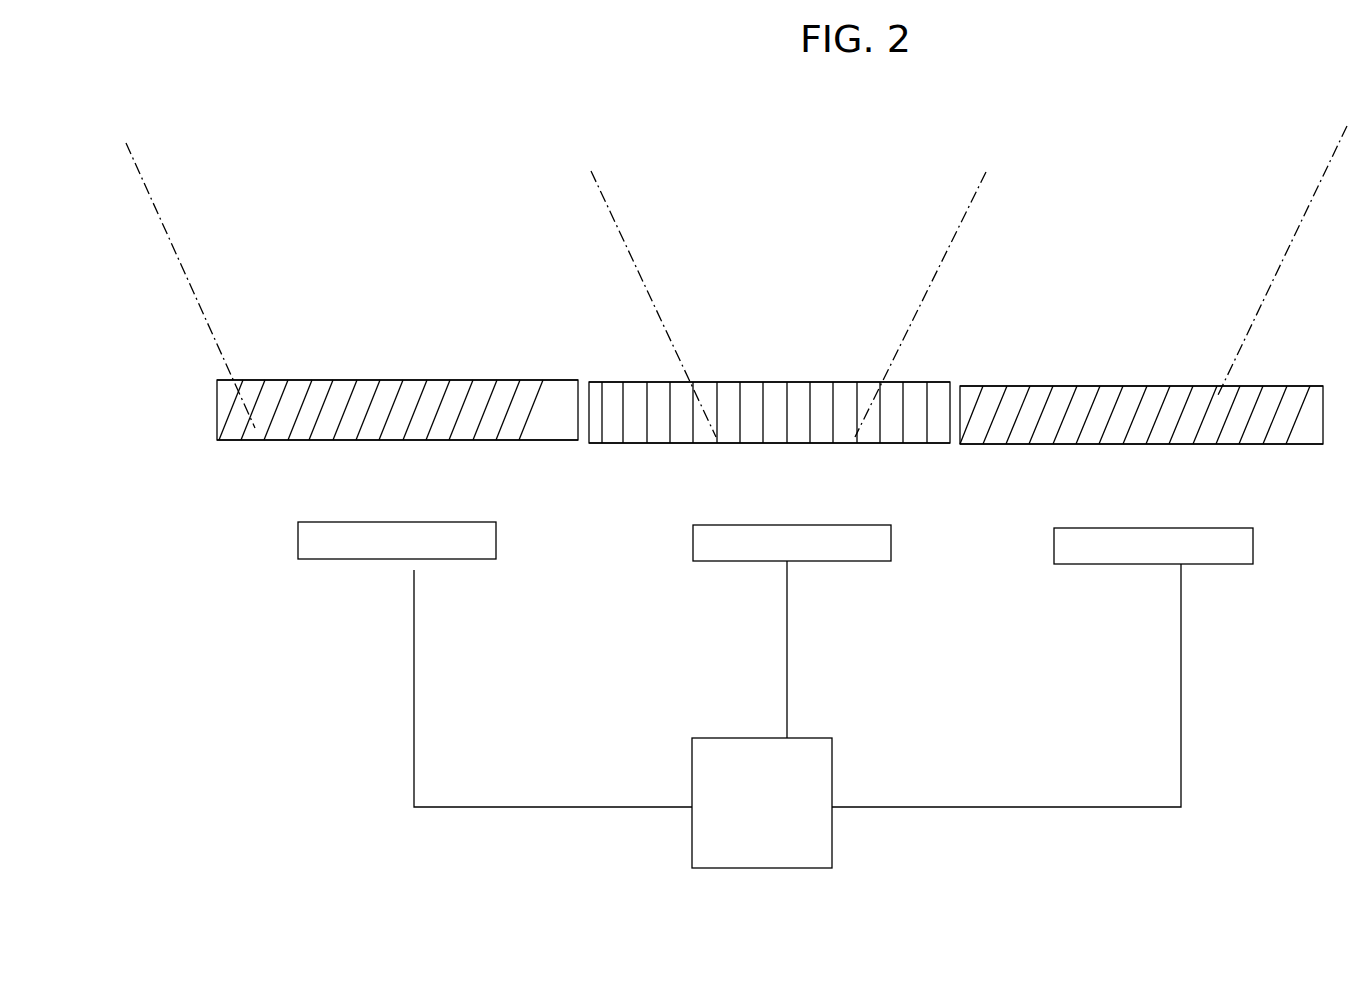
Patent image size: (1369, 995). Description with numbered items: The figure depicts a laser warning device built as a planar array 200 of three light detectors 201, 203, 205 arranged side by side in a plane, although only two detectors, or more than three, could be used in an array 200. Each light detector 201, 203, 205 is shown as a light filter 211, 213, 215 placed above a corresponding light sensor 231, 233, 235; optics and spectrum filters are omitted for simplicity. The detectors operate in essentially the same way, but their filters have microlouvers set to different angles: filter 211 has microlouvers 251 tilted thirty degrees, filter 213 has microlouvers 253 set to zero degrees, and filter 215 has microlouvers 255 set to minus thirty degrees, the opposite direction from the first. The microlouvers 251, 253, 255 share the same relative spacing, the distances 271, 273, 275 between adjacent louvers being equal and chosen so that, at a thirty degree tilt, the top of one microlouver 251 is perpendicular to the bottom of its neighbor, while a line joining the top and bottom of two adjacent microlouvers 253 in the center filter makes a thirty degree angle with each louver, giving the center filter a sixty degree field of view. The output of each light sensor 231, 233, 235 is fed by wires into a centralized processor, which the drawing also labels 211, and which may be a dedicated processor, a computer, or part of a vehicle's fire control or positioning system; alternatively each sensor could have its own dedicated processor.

The array 200 is at (510, 147).
The light detector 201 is at (311, 345).
The light detector 203 is at (660, 347).
The light detector 205 is at (1043, 348).
The light filter 211 is at (440, 380).
The light filter 213 is at (798, 382).
The light filter 215 is at (1205, 386).
The light sensor 231 is at (379, 560).
The light sensor 233 is at (809, 552).
The light sensor 235 is at (1181, 553).
The microlouvers 251 is at (322, 404).
The microlouvers 253 is at (741, 420).
The microlouvers 255 is at (1086, 410).
The distance 271 is at (370, 442).
The distance 273 is at (778, 445).
The distance 275 is at (1116, 446).